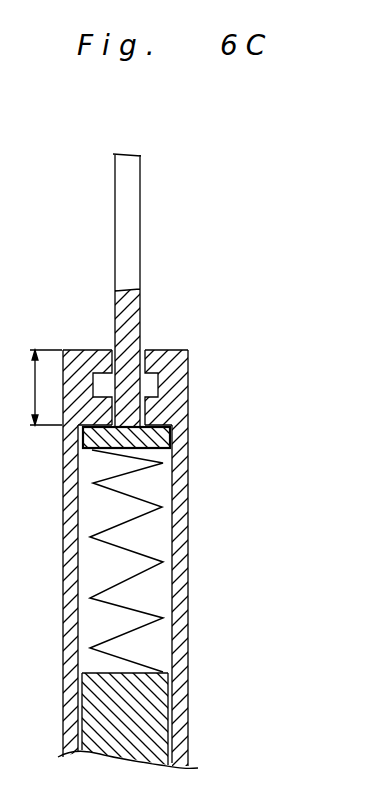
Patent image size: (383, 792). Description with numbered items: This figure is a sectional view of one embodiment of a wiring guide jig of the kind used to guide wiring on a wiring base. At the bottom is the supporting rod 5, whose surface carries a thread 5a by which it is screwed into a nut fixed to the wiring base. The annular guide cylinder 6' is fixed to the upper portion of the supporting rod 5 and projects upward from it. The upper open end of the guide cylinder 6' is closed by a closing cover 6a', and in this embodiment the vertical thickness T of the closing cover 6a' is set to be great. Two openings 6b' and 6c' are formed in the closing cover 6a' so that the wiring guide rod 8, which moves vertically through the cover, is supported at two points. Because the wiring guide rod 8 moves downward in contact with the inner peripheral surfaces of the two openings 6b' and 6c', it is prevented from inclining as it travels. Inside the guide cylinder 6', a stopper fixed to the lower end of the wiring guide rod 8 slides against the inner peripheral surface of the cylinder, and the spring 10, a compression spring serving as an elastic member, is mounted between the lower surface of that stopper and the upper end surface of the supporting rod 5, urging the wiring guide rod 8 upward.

The supporting rod 5 is at (147, 712).
The thread 5a is at (127, 672).
The guide cylinder 6' is at (151, 559).
The closing cover 6a' is at (172, 387).
The opening 6b' is at (157, 338).
The opening 6c' is at (164, 421).
The wiring guide rod 8 is at (128, 239).
The spring 10 is at (140, 527).
The vertical thickness T is at (38, 387).